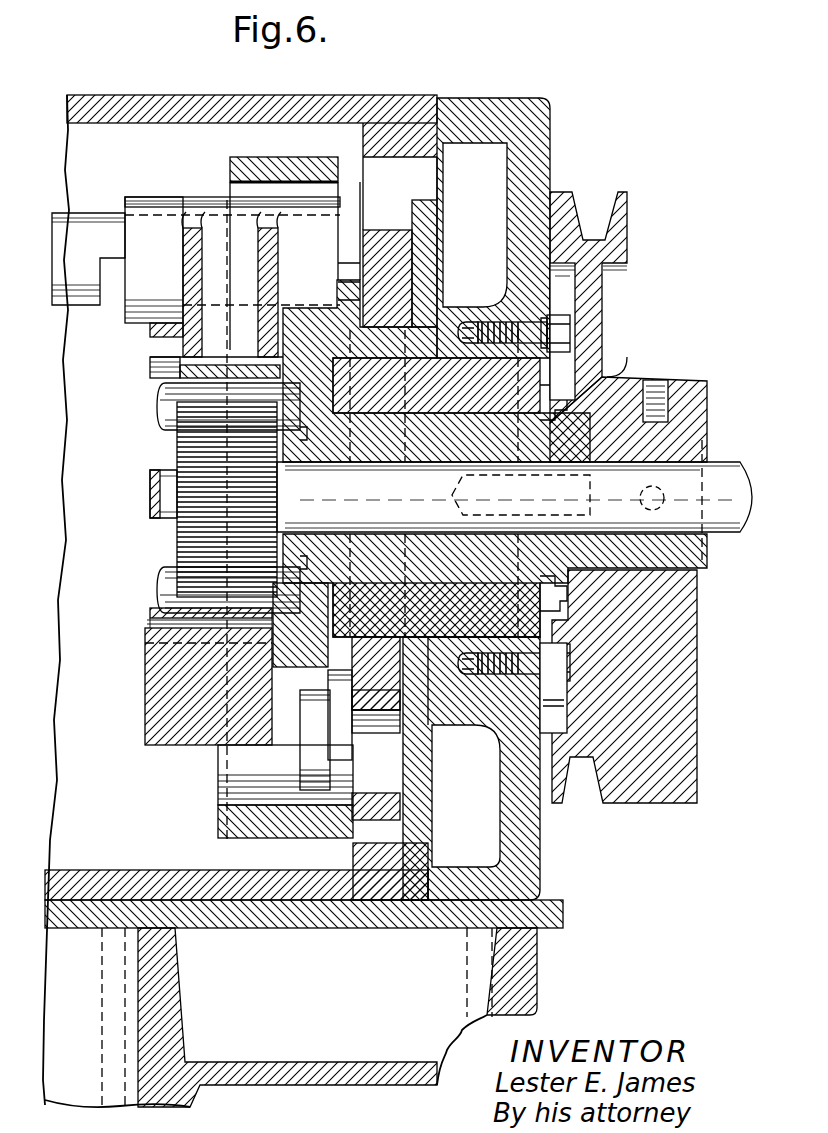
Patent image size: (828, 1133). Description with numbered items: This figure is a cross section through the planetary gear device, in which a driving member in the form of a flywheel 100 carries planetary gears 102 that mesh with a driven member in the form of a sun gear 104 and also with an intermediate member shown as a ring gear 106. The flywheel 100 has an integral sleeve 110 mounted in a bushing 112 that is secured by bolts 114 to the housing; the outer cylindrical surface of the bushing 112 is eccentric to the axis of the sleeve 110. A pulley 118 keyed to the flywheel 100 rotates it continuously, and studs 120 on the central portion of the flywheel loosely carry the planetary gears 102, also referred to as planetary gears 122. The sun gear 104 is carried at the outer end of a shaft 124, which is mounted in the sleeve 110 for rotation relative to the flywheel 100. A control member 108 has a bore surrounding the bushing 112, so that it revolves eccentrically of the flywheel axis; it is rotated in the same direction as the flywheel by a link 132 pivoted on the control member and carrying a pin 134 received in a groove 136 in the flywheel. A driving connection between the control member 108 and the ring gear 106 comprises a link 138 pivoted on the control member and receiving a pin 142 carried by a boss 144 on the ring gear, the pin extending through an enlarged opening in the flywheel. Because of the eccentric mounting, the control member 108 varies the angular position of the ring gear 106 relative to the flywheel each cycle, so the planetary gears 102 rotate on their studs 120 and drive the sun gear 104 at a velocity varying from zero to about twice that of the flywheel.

The flywheel 100 is at (290, 158).
The planetary gears 102 is at (183, 580).
The sun gear 104 is at (198, 494).
The ring gear 106 is at (157, 637).
The control member 108 is at (420, 225).
The sleeve 110 is at (545, 432).
The bushing 112 is at (545, 395).
The bolts 114 is at (558, 330).
The pulley 118 is at (617, 222).
The studs 120 is at (168, 401).
The planetary gears 122 is at (175, 363).
The shaft 124 is at (625, 483).
The link 132 is at (375, 805).
The pin 134 is at (237, 763).
The groove 136 is at (318, 740).
The link 138 is at (380, 242).
The pin 142 is at (292, 164).
The boss 144 is at (208, 203).